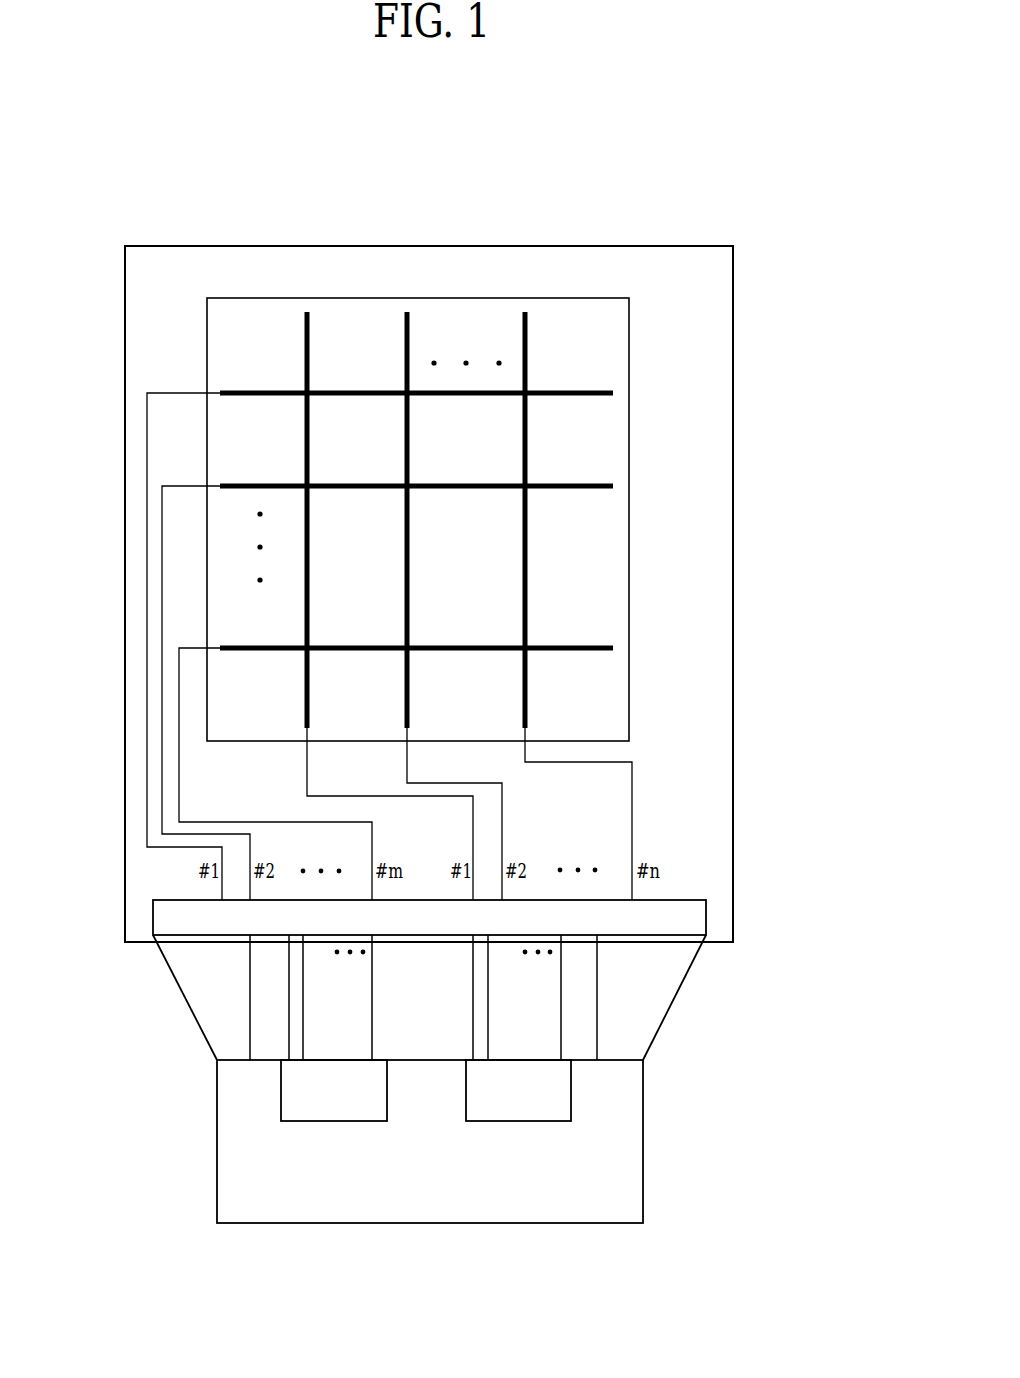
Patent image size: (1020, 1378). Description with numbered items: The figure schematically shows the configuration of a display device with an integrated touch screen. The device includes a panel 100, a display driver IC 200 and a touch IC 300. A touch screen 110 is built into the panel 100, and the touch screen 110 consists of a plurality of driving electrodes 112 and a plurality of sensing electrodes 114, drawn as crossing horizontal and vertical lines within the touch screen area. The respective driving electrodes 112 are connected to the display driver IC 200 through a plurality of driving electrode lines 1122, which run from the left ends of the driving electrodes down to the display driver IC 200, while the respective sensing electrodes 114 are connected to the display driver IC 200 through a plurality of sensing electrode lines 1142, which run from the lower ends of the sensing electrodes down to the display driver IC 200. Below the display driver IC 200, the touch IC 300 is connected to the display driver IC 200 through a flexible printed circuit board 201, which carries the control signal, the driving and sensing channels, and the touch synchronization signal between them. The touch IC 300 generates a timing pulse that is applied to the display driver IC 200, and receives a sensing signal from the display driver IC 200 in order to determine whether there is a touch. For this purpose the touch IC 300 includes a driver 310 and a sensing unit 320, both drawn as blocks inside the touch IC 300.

The panel 100 is at (733, 320).
The touch screen 110 is at (580, 298).
The driving electrodes 112 is at (590, 391).
The sensing electrodes 114 is at (308, 335).
The driving electrode lines 1122 is at (147, 460).
The sensing electrode lines 1142 is at (632, 810).
The display driver IC 200 is at (706, 917).
The flexible printed circuit board 201 is at (683, 985).
The touch IC 300 is at (643, 1138).
The driver 310 is at (335, 1121).
The sensing unit 320 is at (520, 1121).